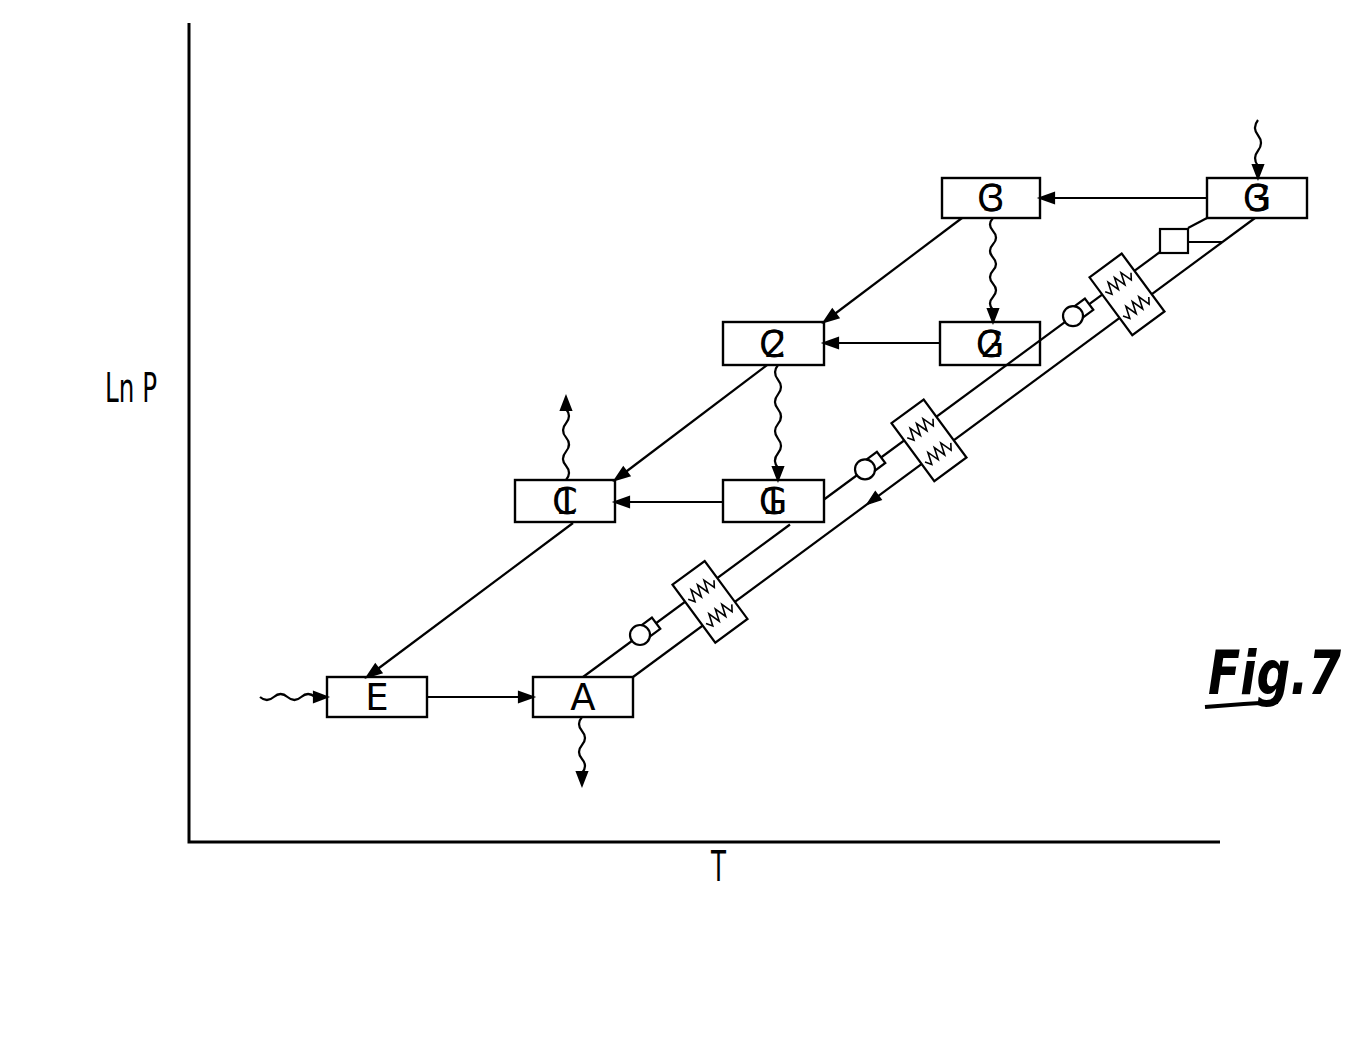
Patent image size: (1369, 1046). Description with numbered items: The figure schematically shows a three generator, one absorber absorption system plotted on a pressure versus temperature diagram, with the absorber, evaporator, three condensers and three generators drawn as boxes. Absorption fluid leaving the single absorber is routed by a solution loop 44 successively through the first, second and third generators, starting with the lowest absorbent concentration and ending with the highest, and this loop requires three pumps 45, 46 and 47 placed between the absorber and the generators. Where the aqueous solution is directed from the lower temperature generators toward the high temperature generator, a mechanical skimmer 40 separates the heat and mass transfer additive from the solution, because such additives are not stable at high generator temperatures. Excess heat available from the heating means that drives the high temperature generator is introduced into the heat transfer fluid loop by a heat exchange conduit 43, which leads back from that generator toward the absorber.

The mechanical skimmer 40 is at (1160, 238).
The heat exchange conduit 43 is at (1206, 242).
The solution loop 44 is at (903, 481).
The pump 45 is at (634, 627).
The pump 46 is at (858, 462).
The pump 47 is at (1064, 306).